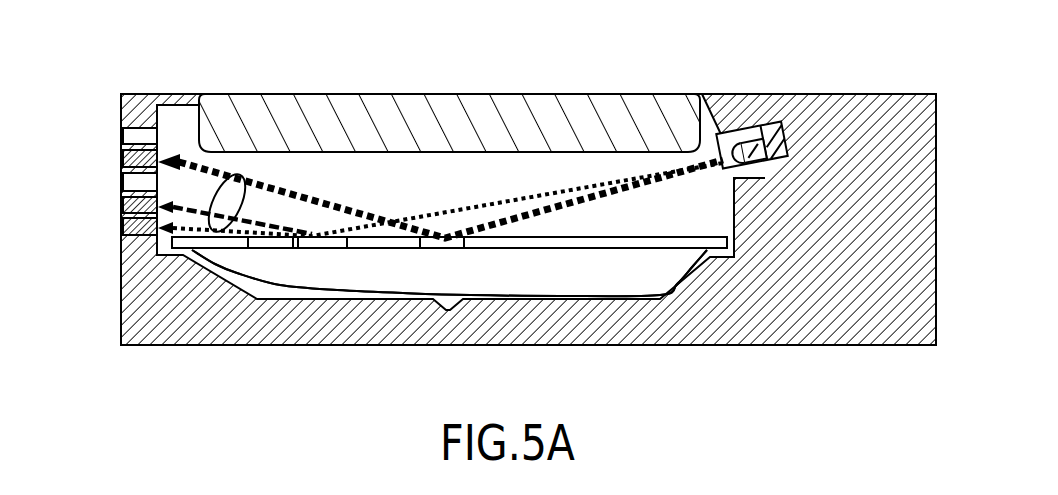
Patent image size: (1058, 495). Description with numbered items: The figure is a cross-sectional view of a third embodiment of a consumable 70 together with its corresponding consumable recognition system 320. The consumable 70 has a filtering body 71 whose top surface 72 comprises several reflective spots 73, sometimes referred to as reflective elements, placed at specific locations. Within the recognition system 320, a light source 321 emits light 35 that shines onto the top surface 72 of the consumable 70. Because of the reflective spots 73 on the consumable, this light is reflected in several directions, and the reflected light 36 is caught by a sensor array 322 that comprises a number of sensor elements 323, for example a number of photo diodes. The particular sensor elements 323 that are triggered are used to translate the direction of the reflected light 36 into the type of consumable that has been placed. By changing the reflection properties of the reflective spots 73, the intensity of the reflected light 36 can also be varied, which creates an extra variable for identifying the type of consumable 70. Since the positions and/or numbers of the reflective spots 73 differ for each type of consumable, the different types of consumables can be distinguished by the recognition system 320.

The consumable recognition system 320 is at (125, 55).
The light source 321 is at (740, 143).
The sensor array 322 is at (141, 126).
The sensor elements 323 is at (123, 228).
The light 35 is at (683, 178).
The reflected light 36 is at (240, 177).
The consumable 70 is at (247, 283).
The filtering body 71 is at (283, 286).
The top surface 72 is at (618, 236).
The reflective spots 73 is at (443, 248).